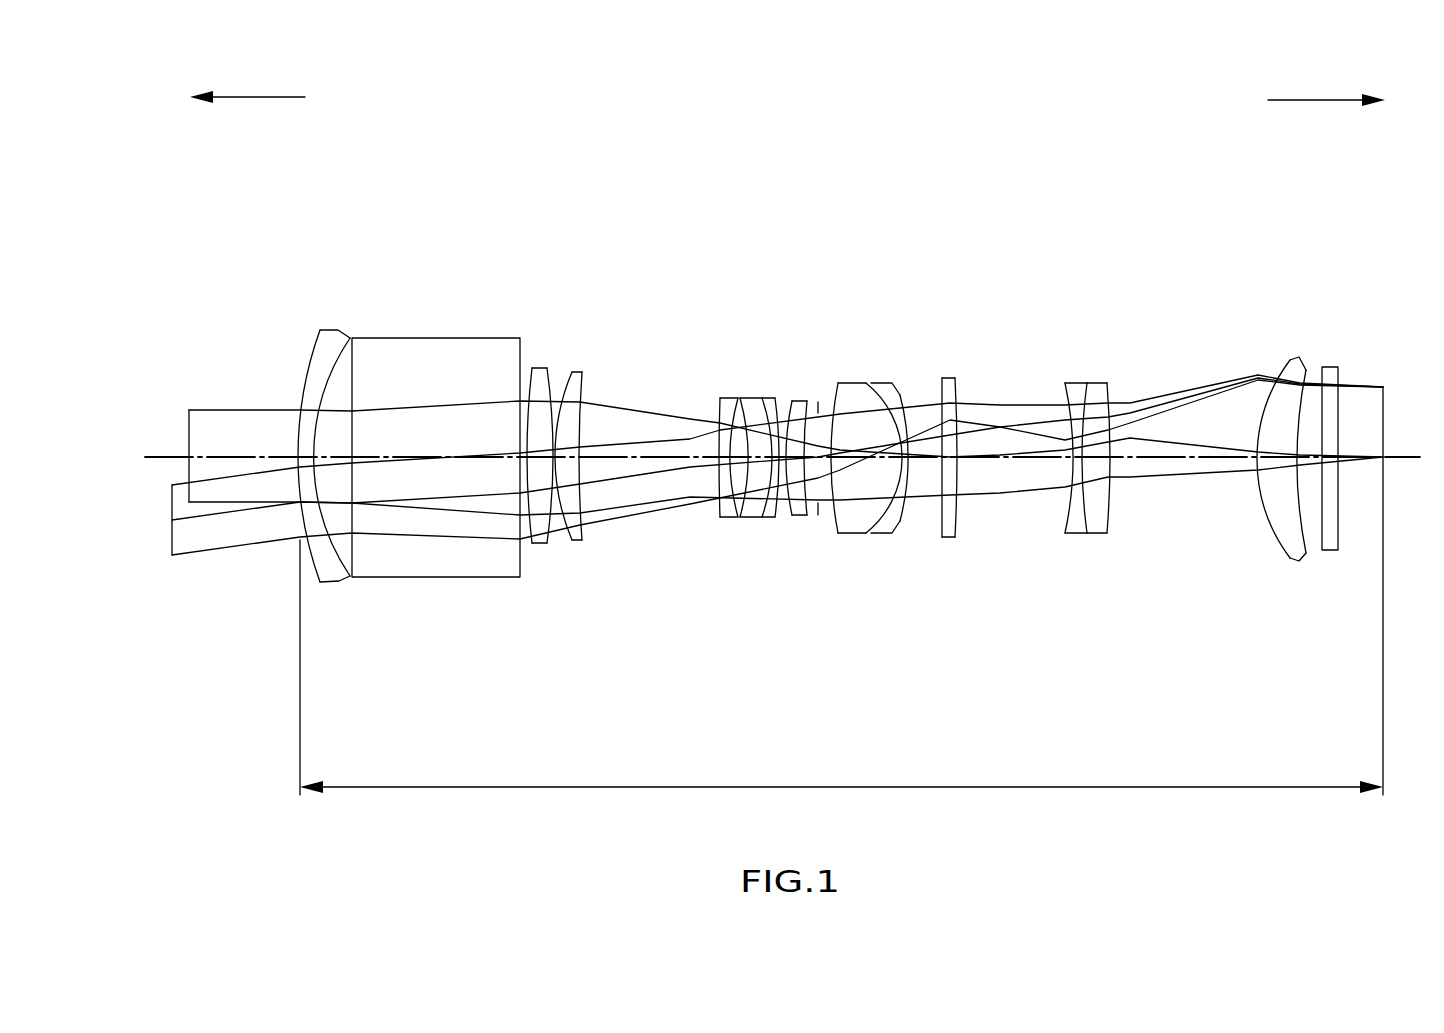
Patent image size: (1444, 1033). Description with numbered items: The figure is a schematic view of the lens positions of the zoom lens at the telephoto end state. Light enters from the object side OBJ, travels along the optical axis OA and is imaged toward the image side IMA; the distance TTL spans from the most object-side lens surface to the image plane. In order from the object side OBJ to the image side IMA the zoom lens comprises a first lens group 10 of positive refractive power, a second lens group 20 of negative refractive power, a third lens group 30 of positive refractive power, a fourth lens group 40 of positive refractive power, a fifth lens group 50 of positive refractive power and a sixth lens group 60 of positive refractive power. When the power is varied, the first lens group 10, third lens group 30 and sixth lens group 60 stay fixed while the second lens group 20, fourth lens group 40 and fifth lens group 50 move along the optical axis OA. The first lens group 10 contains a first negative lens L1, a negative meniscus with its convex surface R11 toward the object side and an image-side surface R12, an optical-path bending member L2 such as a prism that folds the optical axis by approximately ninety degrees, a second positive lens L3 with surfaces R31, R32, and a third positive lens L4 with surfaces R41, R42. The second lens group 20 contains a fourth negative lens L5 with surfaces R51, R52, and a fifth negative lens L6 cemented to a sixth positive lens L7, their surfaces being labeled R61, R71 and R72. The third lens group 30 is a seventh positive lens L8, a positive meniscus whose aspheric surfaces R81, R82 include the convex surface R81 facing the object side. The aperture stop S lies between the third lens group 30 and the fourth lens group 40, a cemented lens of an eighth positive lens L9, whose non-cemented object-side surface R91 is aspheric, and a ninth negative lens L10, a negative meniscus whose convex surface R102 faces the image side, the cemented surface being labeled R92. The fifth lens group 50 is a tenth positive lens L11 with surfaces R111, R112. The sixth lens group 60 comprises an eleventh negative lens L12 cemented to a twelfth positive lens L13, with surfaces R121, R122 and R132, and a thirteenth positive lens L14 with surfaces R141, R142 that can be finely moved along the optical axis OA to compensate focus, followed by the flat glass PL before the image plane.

The first lens group 10 is at (593, 223).
The second lens group 20 is at (788, 308).
The third lens group 30 is at (825, 240).
The fourth lens group 40 is at (933, 308).
The fifth lens group 50 is at (998, 308).
The sixth lens group 60 is at (1333, 308).
The first negative lens L1 is at (337, 343).
The optical-path bending member L2 is at (433, 350).
The second positive lens L3 is at (535, 378).
The third positive lens L4 is at (577, 378).
The fourth negative lens L5 is at (727, 412).
The fifth negative lens L6 is at (754, 405).
The sixth positive lens L7 is at (770, 405).
The seventh positive lens L8 is at (798, 400).
The eighth positive lens L9 is at (855, 400).
The ninth negative lens L10 is at (892, 397).
The tenth positive lens L11 is at (950, 390).
The eleventh negative lens L12 is at (1077, 393).
The twelfth positive lens L13 is at (1102, 393).
The thirteenth positive lens L14 is at (1295, 368).
The aperture stop S is at (818, 400).
The flat glass PL is at (1330, 372).
The optical axis OA is at (758, 455).
The distance between most object side lens surface and image plane TTL is at (841, 591).
The object side OBJ is at (247, 75).
The image side IMA is at (1326, 79).
The convex surface of first negative lens R11 is at (312, 578).
The image-side surface of first lens R12 is at (342, 562).
The object-side surface of third lens R31 is at (533, 545).
The image-side surface of third lens R32 is at (546, 546).
The object-side surface of fourth lens R41 is at (556, 548).
The image-side surface of fourth lens R42 is at (586, 542).
The object-side surface of fifth lens R51 is at (720, 519).
The image-side surface of fifth lens R52 is at (731, 519).
The object-side surface of sixth lens R61 is at (745, 519).
The object-side surface of seventh lens (cemented surface) R71 is at (761, 519).
The image-side surface of seventh lens R72 is at (777, 519).
The convex surface of seventh positive lens R81 is at (792, 517).
The aspheric surface of seventh positive lens R82 is at (808, 517).
The object side surface of eighth positive lens R91 is at (841, 535).
The image-side surface of ninth lens (cemented surface) R92 is at (868, 535).
The convex surface of ninth negative lens R102 is at (901, 532).
The object-side surface of eleventh lens R111 is at (943, 538).
The image-side surface of eleventh lens R112 is at (957, 538).
The object-side surface of twelfth lens R121 is at (1066, 535).
The image-side surface of twelfth lens (cemented surface) R122 is at (1088, 535).
The image-side surface of thirteenth lens R132 is at (1108, 535).
The object-side surface of fourteenth lens R141 is at (1280, 540).
The image-side surface of fourteenth lens R142 is at (1305, 552).